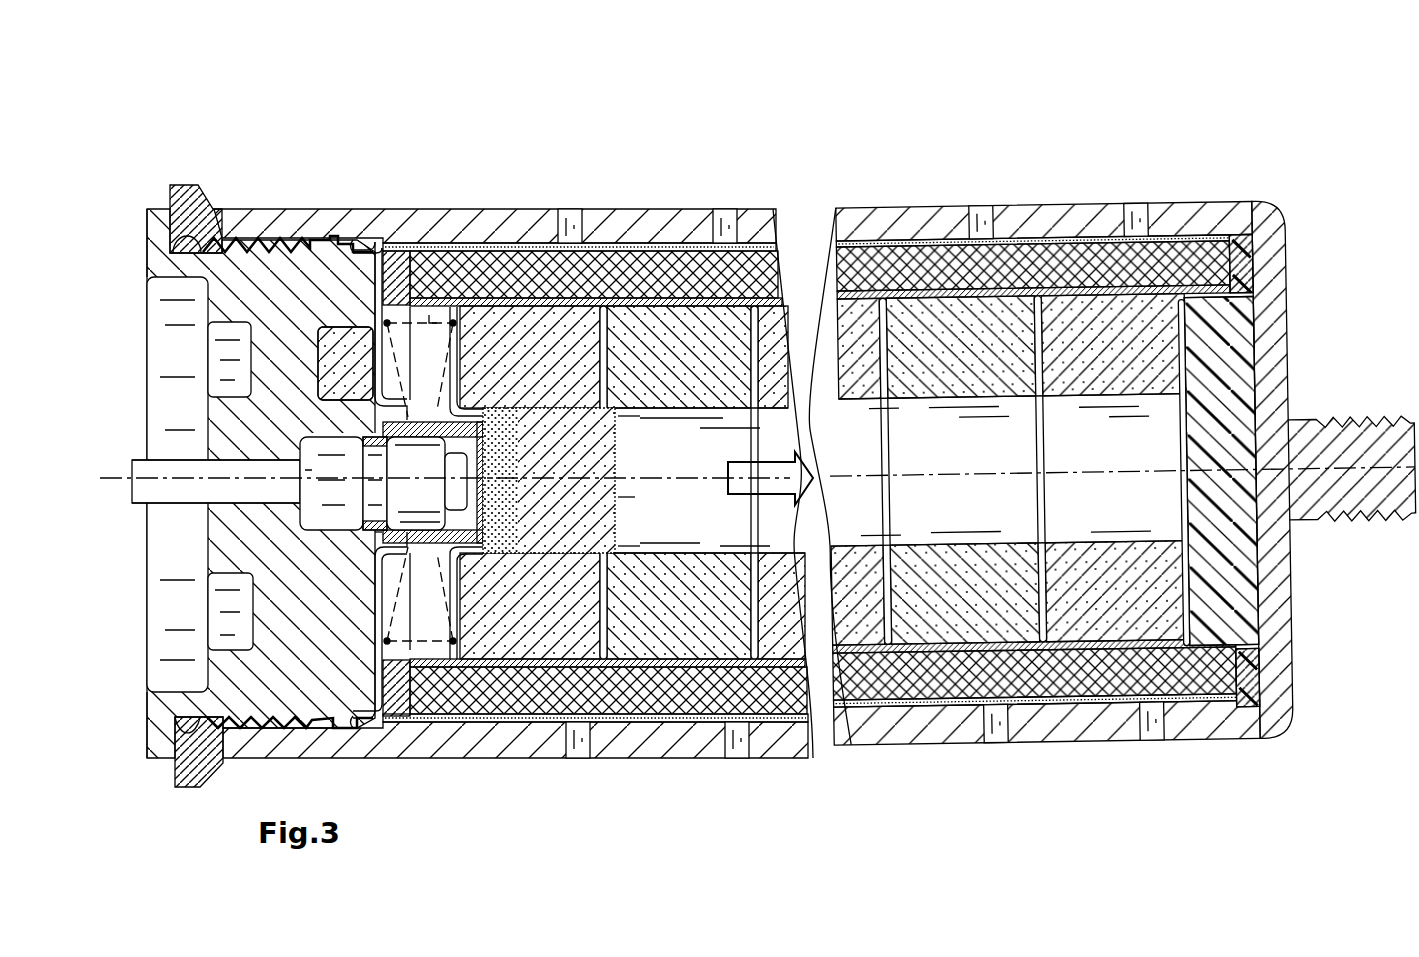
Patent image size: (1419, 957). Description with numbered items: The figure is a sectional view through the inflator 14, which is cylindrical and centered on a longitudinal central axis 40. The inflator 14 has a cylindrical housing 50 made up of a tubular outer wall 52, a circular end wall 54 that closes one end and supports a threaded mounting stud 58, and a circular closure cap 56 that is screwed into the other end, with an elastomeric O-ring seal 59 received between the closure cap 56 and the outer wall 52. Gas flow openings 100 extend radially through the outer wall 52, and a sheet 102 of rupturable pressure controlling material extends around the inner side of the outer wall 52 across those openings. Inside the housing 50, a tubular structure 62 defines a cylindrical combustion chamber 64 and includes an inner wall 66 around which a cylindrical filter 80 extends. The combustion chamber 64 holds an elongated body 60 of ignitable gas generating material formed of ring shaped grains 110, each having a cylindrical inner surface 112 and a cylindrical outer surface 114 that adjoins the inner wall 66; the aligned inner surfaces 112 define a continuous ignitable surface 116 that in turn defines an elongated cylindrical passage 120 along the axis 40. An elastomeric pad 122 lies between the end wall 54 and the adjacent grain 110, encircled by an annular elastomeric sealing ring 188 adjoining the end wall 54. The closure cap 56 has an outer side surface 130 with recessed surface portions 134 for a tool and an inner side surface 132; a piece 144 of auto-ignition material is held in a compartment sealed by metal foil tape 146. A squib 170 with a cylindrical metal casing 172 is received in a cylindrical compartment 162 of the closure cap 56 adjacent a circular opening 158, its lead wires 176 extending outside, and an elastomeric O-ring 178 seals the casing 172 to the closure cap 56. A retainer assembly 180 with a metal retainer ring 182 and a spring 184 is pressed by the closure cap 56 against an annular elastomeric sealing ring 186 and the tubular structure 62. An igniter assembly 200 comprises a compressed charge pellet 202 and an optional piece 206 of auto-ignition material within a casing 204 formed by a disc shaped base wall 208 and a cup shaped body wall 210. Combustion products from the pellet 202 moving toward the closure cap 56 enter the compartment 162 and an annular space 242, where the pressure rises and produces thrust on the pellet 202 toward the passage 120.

The inflator 14 is at (127, 128).
The longitudinal central axis 40 is at (150, 455).
The cylindrical housing 50 is at (242, 195).
The tubular outer wall 52 is at (300, 207).
The circular end wall 54 is at (1272, 304).
The circular closure cap 56 is at (160, 258).
The threaded mounting stud 58 is at (1345, 520).
The elastomeric O-ring seal 59 is at (168, 202).
The body of ignitable gas generating material 60 is at (619, 240).
The tubular structure 62 is at (666, 262).
The cylindrical combustion chamber 64 is at (692, 360).
The inner wall 66 is at (940, 258).
The filter 80 is at (915, 245).
The gas flow openings 100 is at (569, 195).
The sheet of rupturable pressure controlling material 102 is at (880, 240).
The ring shaped pieces of gas generating material 110 is at (498, 640).
The cylindrical inner surface 112 is at (715, 552).
The cylindrical outer surface 114 is at (540, 667).
The ignitable surface 116 is at (857, 530).
The elongated cylindrical passage 120 is at (912, 472).
The elastomeric pad 122 is at (1240, 573).
The outer side surface 130 is at (150, 713).
The inner side surface 132 is at (390, 722).
The recessed surface portions 134 is at (230, 398).
The piece of auto-ignition material 144 is at (352, 328).
The metal foil tape 146 is at (378, 590).
The circular opening 158 is at (486, 446).
The cylindrical compartment 162 is at (430, 474).
The squib 170 is at (300, 420).
The cylindrical metal casing 172 is at (328, 460).
The lead wires 176 is at (140, 461).
The elastomeric O-ring 178 is at (377, 533).
The retainer assembly 180 is at (360, 242).
The metal retainer ring 182 is at (394, 242).
The spring 184 is at (410, 265).
The annular elastomeric sealing ring 186 is at (413, 245).
The annular elastomeric sealing ring 188 is at (1240, 240).
The igniter assembly 200 is at (636, 437).
The compressed charge pellet 202 is at (618, 458).
The casing 204 is at (618, 500).
The piece of auto-ignition material 206 is at (522, 521).
The disc shaped base wall 208 is at (470, 497).
The cylindrical body wall 210 is at (618, 535).
The annular space 242 is at (440, 361).